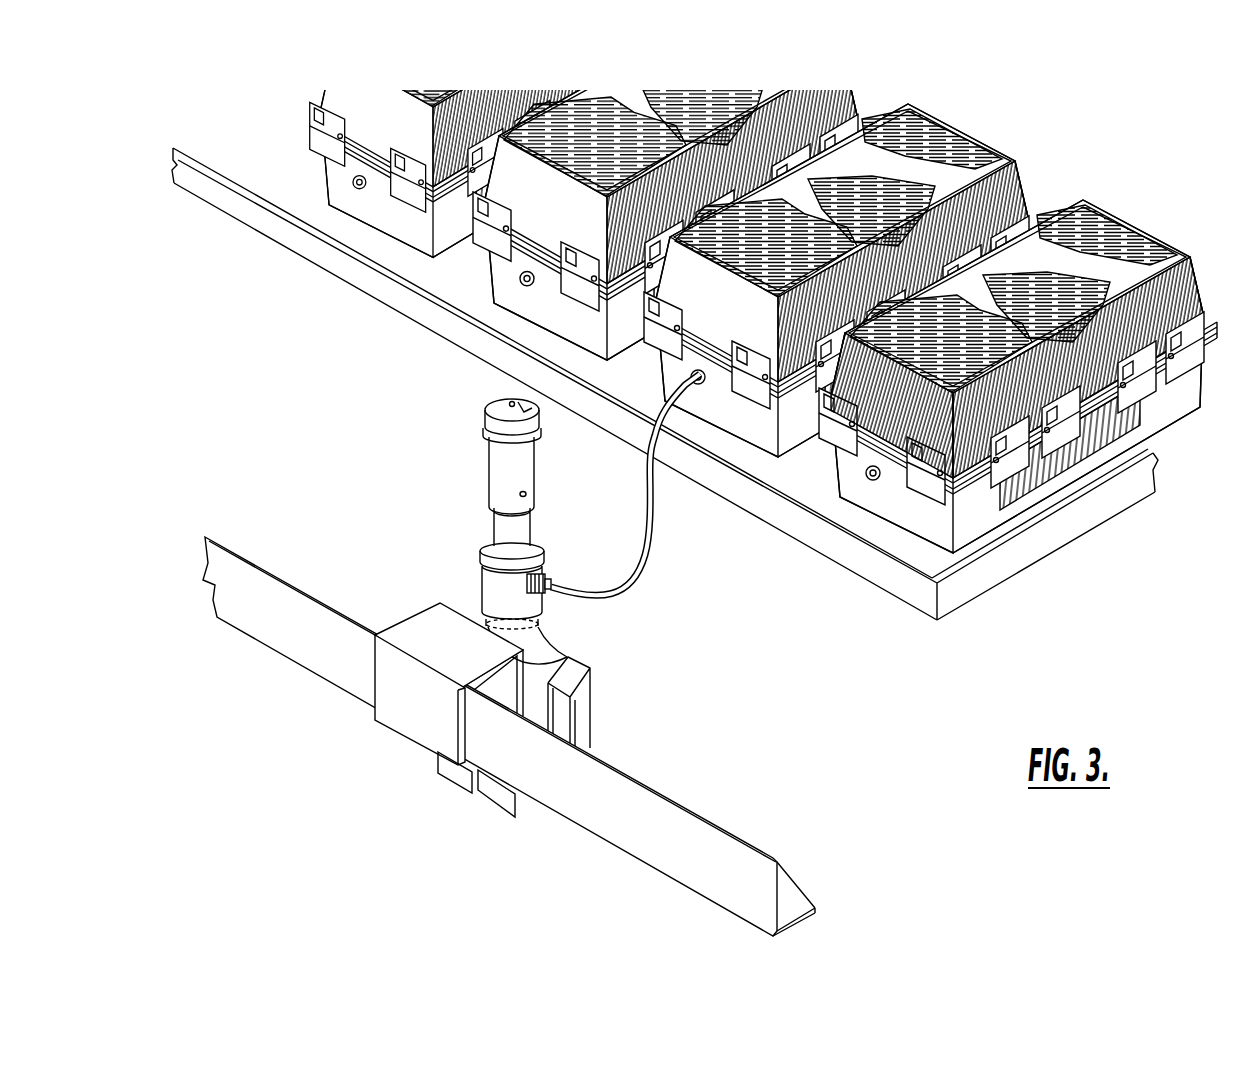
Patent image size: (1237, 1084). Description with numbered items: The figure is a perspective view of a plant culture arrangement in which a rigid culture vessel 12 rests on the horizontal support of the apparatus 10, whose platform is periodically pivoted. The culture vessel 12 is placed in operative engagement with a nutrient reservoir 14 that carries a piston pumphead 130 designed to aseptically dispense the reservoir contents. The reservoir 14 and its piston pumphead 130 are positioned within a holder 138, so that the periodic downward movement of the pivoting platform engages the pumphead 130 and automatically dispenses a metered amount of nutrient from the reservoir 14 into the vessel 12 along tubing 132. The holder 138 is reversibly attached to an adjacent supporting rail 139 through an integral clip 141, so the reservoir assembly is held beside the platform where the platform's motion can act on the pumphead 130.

The support apparatus 10 is at (866, 566).
The culture vessel 12 is at (1193, 283).
The nutrient reservoir 14 is at (548, 653).
The piston pumphead 130 is at (485, 464).
The tubing 132 is at (628, 589).
The holder 138 is at (574, 697).
The supporting rail 139 is at (700, 864).
The integral clip 141 is at (430, 718).